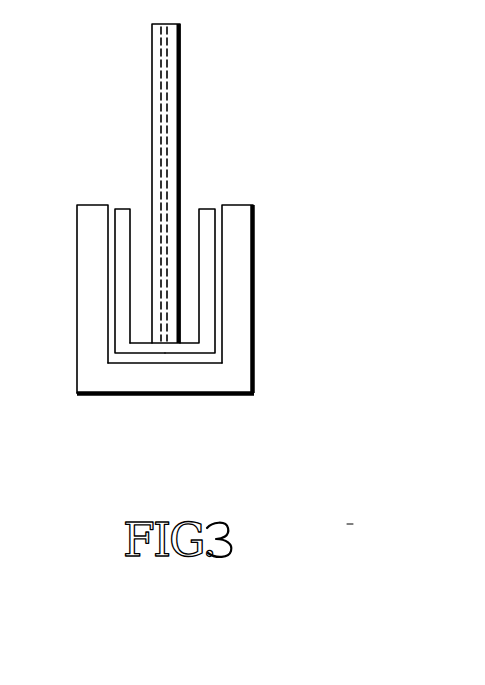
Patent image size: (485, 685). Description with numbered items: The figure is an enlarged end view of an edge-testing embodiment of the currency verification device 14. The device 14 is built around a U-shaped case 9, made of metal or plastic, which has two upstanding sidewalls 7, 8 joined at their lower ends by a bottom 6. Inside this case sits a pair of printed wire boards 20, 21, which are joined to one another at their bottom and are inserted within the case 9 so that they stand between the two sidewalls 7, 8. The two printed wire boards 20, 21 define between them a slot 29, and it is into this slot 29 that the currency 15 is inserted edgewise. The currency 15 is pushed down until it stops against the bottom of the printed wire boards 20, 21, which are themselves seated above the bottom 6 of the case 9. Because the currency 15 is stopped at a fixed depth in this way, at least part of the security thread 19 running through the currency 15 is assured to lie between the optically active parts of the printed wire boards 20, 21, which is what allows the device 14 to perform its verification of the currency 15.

The bottom 6 is at (178, 396).
The sidewall 7 is at (77, 344).
The sidewall 8 is at (256, 273).
The case 9 is at (255, 357).
The verification device 14 is at (207, 328).
The currency 15 is at (181, 60).
The security thread 19 is at (161, 88).
The printed wire board 20 is at (207, 208).
The printed wire board 21 is at (122, 207).
The slot 29 is at (191, 205).